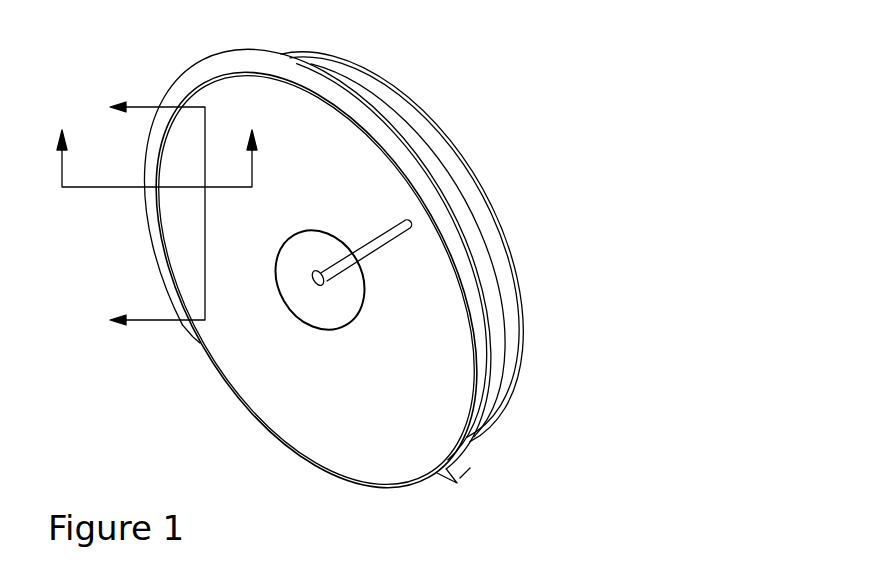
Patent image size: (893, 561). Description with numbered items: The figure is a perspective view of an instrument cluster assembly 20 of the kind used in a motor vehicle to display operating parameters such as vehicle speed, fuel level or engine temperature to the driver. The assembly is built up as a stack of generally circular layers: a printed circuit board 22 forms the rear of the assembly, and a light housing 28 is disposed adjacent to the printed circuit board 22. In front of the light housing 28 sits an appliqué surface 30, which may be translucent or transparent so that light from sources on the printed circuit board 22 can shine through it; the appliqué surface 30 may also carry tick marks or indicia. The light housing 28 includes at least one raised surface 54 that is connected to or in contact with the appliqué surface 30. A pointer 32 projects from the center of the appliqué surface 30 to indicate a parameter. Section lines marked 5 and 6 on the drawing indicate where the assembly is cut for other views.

The instrument cluster assembly 20 is at (163, 359).
The printed circuit board 22 is at (467, 193).
The light housing 28 is at (482, 468).
The appliqué surface 30 is at (270, 413).
The pointer 32 is at (370, 252).
The raised surface 54 is at (480, 440).
The section line 5- 5 is at (149, 215).
The section line 6- 6 is at (156, 149).